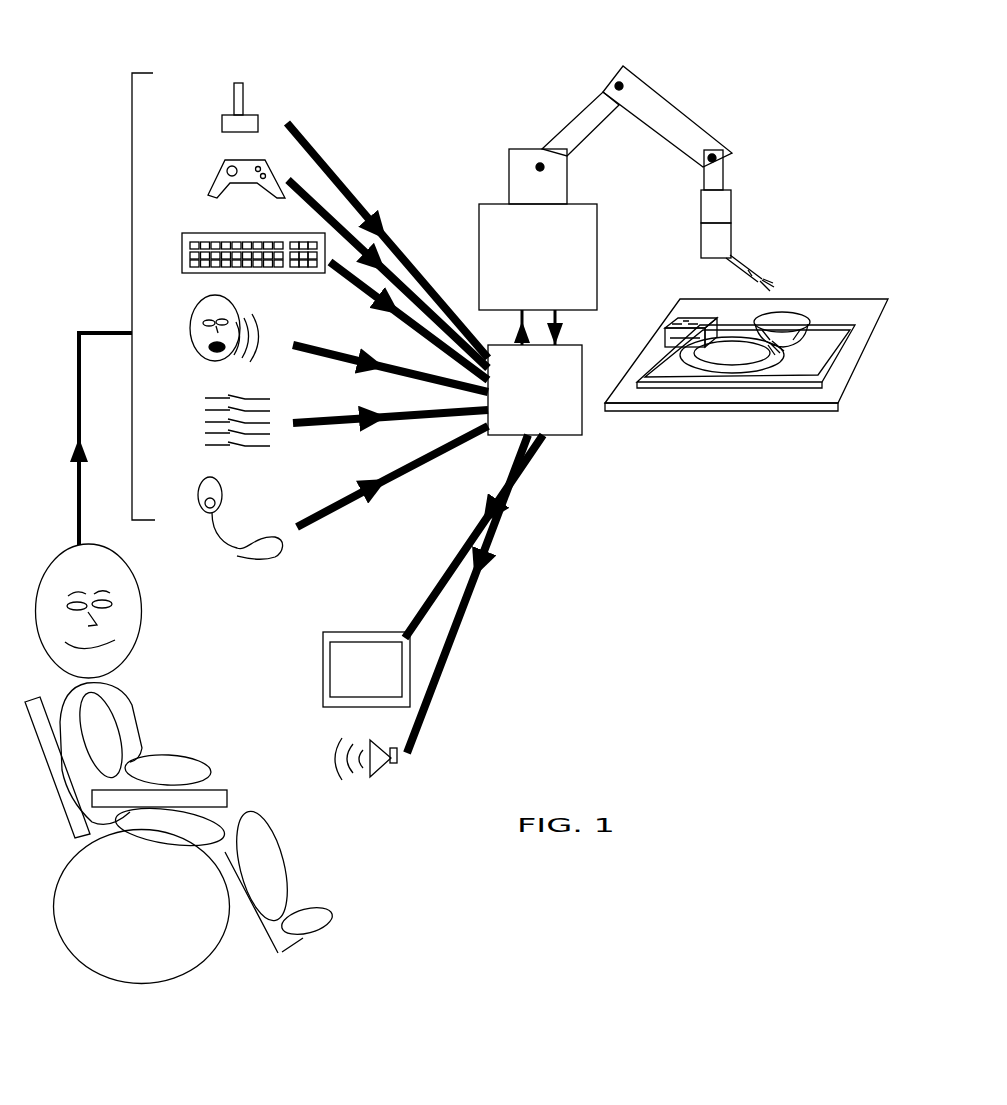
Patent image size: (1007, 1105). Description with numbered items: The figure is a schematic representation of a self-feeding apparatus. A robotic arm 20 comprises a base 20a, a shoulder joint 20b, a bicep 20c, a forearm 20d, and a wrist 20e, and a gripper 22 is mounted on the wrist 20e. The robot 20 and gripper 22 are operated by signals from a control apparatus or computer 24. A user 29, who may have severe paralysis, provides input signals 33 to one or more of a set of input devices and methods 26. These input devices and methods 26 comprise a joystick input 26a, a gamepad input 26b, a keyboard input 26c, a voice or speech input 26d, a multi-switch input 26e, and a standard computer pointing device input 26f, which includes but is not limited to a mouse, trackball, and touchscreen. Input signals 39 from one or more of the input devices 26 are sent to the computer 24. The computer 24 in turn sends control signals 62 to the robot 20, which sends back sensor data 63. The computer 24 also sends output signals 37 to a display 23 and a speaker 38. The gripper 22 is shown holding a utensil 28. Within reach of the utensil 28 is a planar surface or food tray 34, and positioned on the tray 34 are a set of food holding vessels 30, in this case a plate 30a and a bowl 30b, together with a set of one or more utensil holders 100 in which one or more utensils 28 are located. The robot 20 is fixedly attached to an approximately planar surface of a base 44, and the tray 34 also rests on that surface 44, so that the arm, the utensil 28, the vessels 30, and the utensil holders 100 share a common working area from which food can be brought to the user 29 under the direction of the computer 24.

The robotic arm 20 is at (555, 115).
The base 20a is at (538, 257).
The shoulder joint 20b is at (538, 176).
The bicep 20c is at (593, 112).
The forearm 20d is at (664, 128).
The wrist 20e is at (731, 198).
The gripper 22 is at (731, 237).
The display 23 is at (366, 669).
The control apparatus or computer 24 is at (535, 390).
The set of input devices and methods 26 is at (122, 262).
The joystick input 26a is at (222, 120).
The gamepad input 26b is at (217, 177).
The keyboard input 26c is at (236, 253).
The voice or speech input 26d is at (198, 320).
The multi-switch input 26e is at (202, 422).
The standard computer pointing device input 26f is at (198, 492).
The utensil 28 is at (767, 272).
The user 29 is at (130, 752).
The set of food holding vessels 30 is at (794, 382).
The plate 30a is at (723, 372).
The bowl 30b is at (782, 317).
The input signals 33 is at (76, 400).
The food tray 34 is at (800, 363).
The output signals 37 is at (472, 603).
The speaker 38 is at (378, 758).
The input signals 39 is at (390, 478).
The base 44 is at (678, 395).
The control signals 62 is at (530, 343).
The sensor data 63 is at (560, 343).
The utensil holder 100 is at (693, 318).